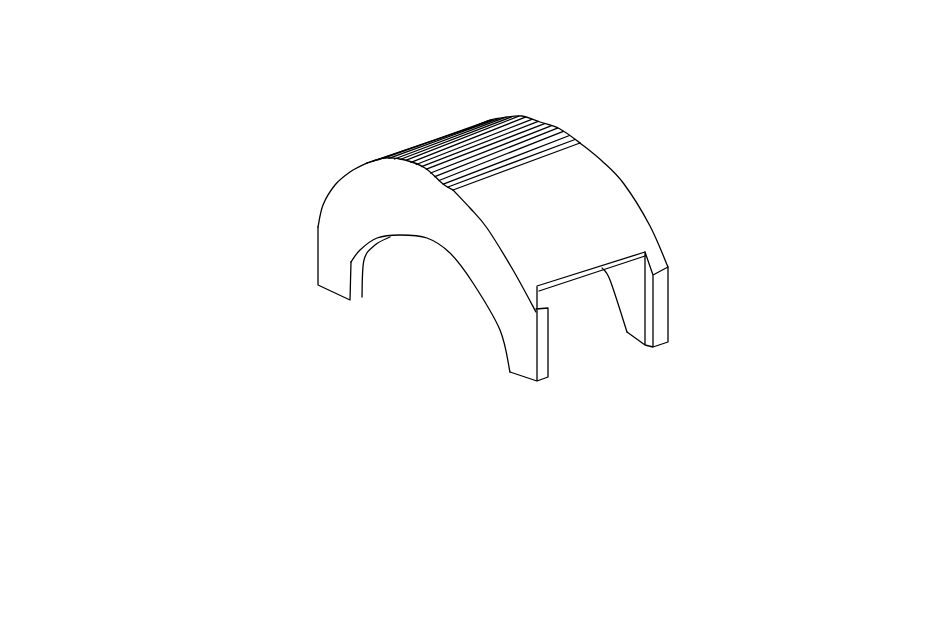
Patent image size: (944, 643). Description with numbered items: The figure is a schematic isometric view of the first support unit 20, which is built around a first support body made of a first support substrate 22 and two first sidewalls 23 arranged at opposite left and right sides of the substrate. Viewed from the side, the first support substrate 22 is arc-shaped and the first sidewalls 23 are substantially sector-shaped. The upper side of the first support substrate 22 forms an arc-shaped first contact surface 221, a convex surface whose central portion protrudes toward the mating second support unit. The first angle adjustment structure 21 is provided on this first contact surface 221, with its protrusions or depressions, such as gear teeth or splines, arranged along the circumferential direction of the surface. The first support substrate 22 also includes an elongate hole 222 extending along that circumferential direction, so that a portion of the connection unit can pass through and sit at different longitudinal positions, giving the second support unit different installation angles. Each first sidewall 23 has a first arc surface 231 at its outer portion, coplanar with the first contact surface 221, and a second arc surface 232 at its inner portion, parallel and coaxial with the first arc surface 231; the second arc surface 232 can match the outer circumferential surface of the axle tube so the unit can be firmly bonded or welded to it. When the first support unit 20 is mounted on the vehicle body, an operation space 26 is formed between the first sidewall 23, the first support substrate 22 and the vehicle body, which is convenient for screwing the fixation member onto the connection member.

The first support unit 20 is at (127, 82).
The first angle adjustment structure 21 is at (579, 140).
The first support substrate 22 is at (593, 267).
The first sidewall 23 is at (343, 242).
The operation space 26 is at (592, 340).
The first contact surface 221 is at (616, 205).
The elongate hole 222 is at (458, 110).
The first arc surface 231 is at (343, 180).
The second arc surface 232 is at (497, 337).